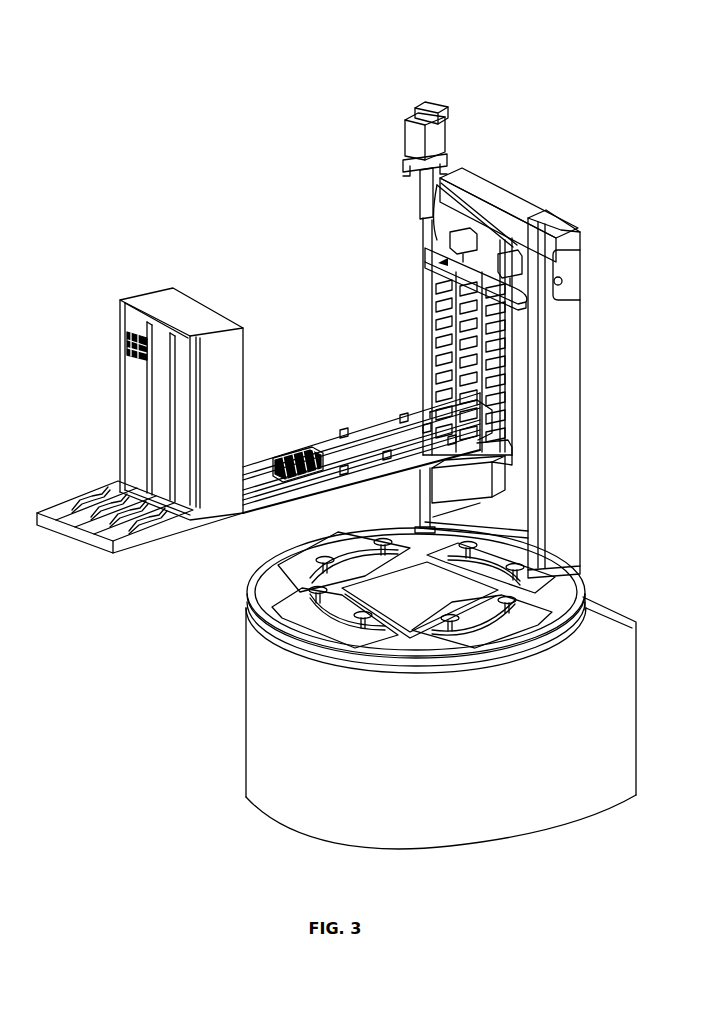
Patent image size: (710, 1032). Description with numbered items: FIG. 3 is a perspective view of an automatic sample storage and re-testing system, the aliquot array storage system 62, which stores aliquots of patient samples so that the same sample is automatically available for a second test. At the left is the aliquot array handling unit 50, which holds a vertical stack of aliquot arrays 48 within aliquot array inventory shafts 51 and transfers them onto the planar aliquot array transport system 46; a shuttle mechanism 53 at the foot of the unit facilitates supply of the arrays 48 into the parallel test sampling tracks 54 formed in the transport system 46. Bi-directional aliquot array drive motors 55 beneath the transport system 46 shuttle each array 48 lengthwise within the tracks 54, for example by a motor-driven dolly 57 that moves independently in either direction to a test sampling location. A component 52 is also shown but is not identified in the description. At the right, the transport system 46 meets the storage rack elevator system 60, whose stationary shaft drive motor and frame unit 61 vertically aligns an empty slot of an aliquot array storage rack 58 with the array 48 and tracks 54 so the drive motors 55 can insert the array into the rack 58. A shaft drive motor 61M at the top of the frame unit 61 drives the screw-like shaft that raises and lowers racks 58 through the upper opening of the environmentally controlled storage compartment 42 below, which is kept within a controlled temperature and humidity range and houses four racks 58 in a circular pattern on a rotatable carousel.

The storage compartment 42 is at (418, 764).
The aliquot array transport system 46 is at (306, 400).
The aliquot array 48 is at (127, 342).
The aliquot array handling unit 50 is at (163, 288).
The aliquot array inventory shafts 51 is at (178, 438).
The carriage support post 52 is at (347, 488).
The shuttle mechanism 53 is at (148, 557).
The test sampling tracks 54 is at (410, 445).
The aliquot array drive motors 55 is at (471, 492).
The motor-driven dolly 57 is at (383, 463).
The aliquot array storage rack 58 is at (436, 263).
The storage rack elevator system 60 is at (596, 305).
The shaft drive motor and frame unit 61 is at (442, 128).
The shaft drive motor 61M is at (433, 108).
The aliquot array storage system 62 is at (258, 160).